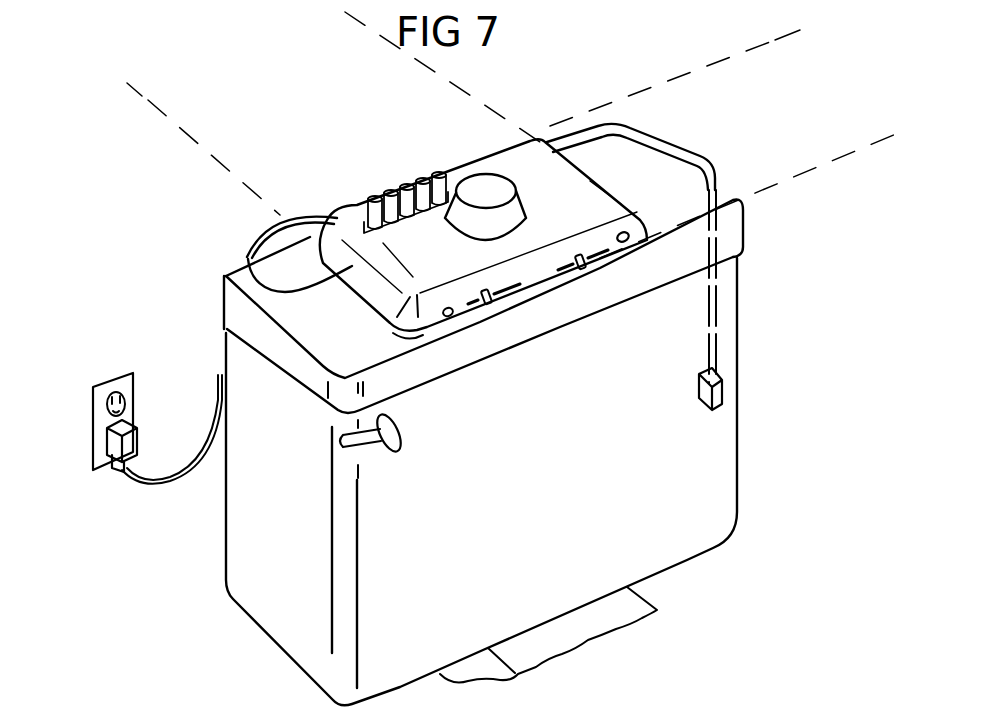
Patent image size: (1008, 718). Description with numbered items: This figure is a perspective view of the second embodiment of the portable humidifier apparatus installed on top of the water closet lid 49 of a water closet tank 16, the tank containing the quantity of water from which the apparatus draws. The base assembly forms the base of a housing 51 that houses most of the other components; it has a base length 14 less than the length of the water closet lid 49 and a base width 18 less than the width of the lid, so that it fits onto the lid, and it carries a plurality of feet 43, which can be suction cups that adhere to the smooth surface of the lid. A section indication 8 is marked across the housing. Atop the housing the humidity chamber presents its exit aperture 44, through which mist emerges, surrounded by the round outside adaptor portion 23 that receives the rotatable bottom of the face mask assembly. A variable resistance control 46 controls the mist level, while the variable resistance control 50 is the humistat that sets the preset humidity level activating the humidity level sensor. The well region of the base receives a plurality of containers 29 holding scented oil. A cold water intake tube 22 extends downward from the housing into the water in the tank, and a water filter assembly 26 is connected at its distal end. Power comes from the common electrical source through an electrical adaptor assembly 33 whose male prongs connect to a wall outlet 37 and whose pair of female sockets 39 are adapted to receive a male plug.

The water closet tank 16 is at (287, 572).
The base length 14 is at (338, 11).
The base width 18 is at (907, 129).
The section line 8- 8 is at (672, 345).
The exit aperture 44 is at (514, 224).
The outside adaptor portion 23 is at (527, 208).
The cold water intake tube 22 is at (714, 163).
The water filter assembly 26 is at (722, 390).
The containers 29 is at (378, 198).
The water closet lid 49 is at (629, 240).
The variable resistance control 46 is at (490, 306).
The variable resistance control 50 is at (580, 270).
The housing 51 is at (247, 260).
The feet 43 is at (325, 403).
The wall outlet 37 is at (113, 390).
The electrical adaptor assembly 33 is at (127, 394).
The female sockets 39 is at (143, 430).